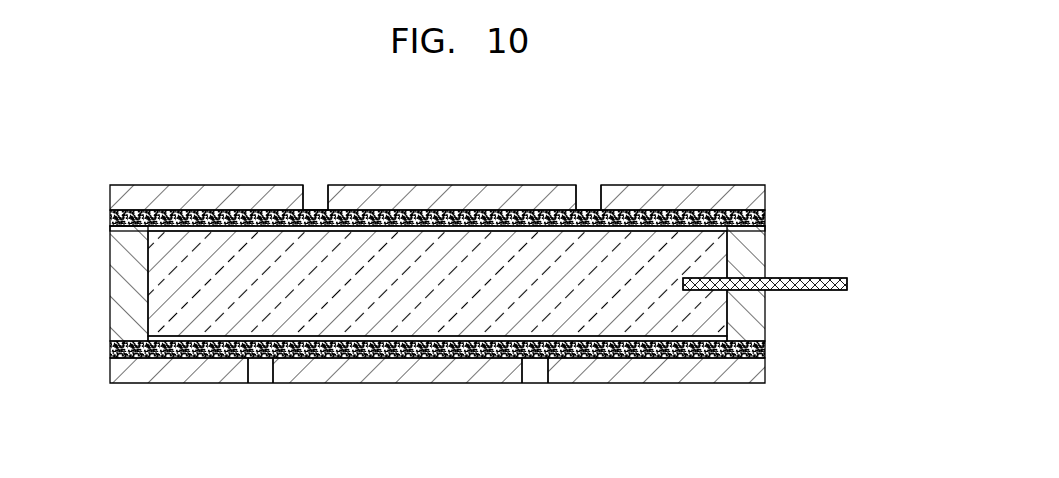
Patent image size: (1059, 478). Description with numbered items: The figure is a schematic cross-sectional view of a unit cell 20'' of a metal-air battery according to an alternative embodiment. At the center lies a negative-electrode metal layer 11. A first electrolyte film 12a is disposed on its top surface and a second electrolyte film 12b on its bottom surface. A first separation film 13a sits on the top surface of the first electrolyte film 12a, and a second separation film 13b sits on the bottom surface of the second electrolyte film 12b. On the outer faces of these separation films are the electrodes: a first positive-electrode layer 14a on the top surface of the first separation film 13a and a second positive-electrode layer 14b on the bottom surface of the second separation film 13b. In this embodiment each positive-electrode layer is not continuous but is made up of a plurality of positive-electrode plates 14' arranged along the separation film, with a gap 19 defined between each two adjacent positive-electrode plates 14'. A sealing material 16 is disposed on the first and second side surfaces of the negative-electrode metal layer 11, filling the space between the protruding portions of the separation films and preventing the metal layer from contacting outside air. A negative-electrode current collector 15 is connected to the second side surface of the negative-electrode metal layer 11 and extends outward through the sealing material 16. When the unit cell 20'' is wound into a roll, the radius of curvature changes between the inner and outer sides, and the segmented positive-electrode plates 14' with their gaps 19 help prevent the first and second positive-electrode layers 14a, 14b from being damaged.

The negative-electrode metal layer 11 is at (718, 258).
The first electrolyte film 12a is at (762, 232).
The second electrolyte film 12b is at (758, 335).
The first separation film 13a is at (760, 217).
The second separation film 13b is at (760, 357).
The first positive-electrode layer 14a is at (760, 198).
The second positive-electrode layer 14b is at (762, 372).
The positive-electrode plates 14' is at (270, 292).
The negative-electrode current collector 15 is at (820, 278).
The sealing material 16 is at (112, 283).
The gap 19 is at (585, 187).
The unit cell 20'' is at (456, 275).